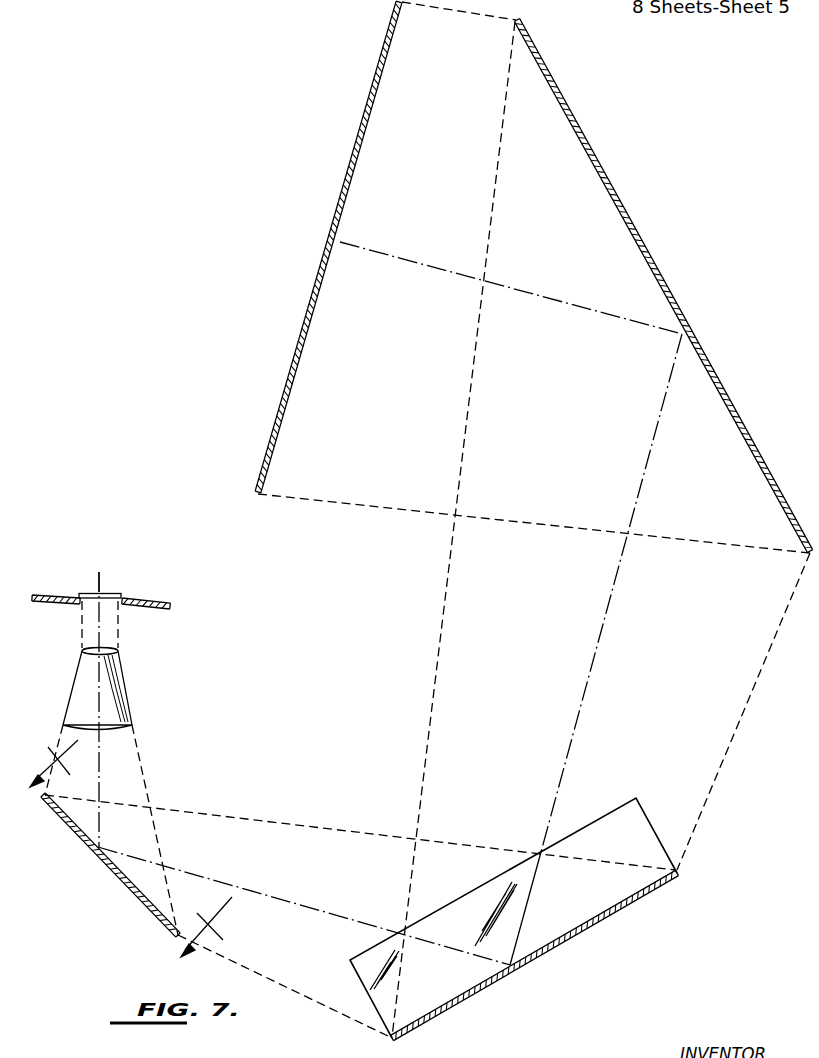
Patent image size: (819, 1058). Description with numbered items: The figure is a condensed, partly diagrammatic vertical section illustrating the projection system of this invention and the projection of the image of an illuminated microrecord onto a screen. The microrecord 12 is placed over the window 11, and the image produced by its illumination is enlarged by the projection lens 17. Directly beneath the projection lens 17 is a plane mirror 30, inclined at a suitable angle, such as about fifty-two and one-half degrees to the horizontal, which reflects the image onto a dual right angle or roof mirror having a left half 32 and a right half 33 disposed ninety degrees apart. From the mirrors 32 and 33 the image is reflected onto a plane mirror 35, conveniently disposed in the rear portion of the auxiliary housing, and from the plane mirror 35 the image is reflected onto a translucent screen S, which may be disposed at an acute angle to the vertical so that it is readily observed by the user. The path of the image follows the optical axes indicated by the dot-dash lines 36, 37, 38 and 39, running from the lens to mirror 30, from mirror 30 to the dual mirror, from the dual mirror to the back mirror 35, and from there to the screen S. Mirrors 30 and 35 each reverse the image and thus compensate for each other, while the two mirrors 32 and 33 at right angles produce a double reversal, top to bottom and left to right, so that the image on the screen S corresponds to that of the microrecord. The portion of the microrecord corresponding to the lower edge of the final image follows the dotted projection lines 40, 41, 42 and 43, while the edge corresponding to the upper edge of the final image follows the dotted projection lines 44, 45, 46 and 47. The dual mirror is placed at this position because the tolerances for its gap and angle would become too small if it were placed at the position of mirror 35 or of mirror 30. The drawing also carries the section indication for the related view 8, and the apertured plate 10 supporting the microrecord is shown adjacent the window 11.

The translucent screen S is at (338, 200).
The plane mirror 35 is at (660, 275).
The dotted projection line 47 is at (452, 14).
The dotted projection line 43 is at (566, 528).
The optical axis 39 is at (581, 306).
The optical axis 38 is at (580, 706).
The dotted projection line 42 is at (748, 706).
The dotted projection line 46 is at (449, 564).
The dotted projection line 41 is at (336, 830).
The optical axis 37 is at (304, 906).
The optical axis 36 is at (100, 782).
The dotted projection line 44 is at (139, 757).
The dotted projection line 40 is at (66, 741).
The dotted projection line 45 is at (300, 993).
The plane mirror 30 is at (118, 880).
The left half of dual right angle mirror 32 is at (648, 821).
The right half of dual right angle mirror 33 is at (584, 928).
The projection lens 17 is at (125, 686).
The apertured plate 10 is at (152, 599).
The window 11 is at (120, 600).
The microrecord 12 is at (103, 594).
The section line of FIG. 8 is at (131, 848).